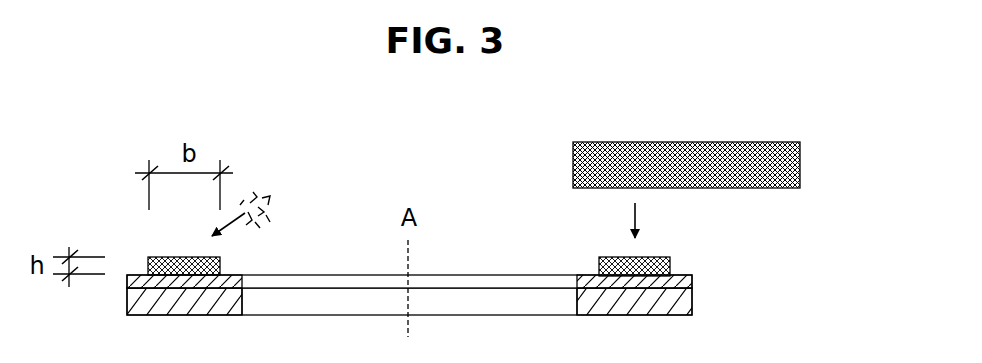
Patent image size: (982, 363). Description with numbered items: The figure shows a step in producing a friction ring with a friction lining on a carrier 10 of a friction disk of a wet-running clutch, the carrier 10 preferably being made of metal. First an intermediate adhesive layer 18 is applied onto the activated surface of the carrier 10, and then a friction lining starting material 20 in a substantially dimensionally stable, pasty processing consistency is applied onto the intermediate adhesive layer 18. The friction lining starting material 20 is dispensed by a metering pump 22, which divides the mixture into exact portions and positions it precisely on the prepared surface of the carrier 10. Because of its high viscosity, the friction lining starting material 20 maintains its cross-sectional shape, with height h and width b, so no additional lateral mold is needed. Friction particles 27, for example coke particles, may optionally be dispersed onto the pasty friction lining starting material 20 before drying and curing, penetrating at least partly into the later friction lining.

The carrier 10 is at (677, 305).
The intermediate adhesive layer 18 is at (677, 282).
The friction lining starting material 20 is at (670, 262).
The metering pump 22 is at (783, 162).
The friction particles 27 is at (272, 199).